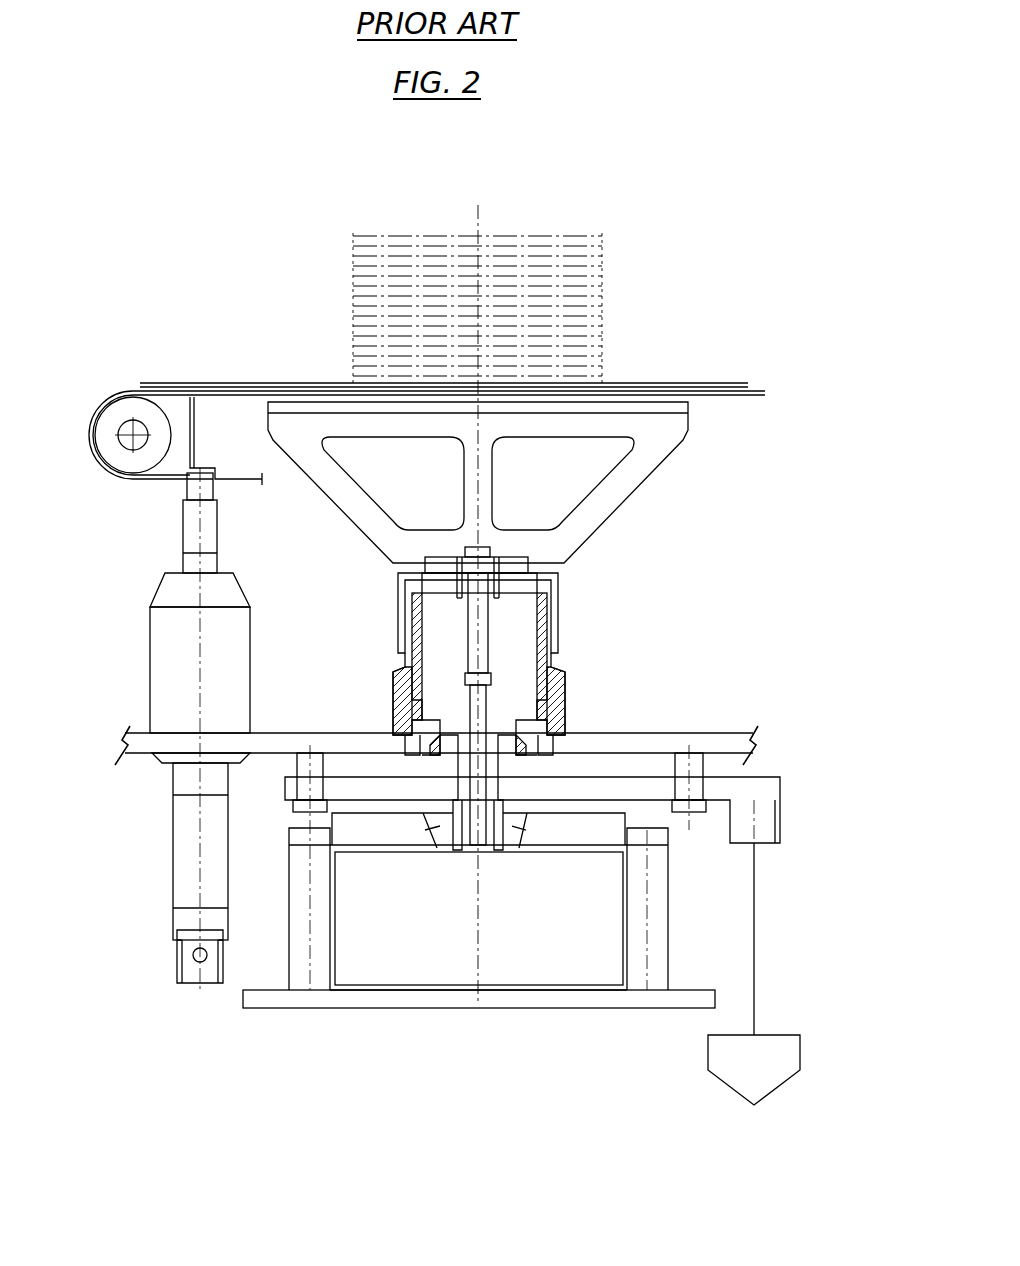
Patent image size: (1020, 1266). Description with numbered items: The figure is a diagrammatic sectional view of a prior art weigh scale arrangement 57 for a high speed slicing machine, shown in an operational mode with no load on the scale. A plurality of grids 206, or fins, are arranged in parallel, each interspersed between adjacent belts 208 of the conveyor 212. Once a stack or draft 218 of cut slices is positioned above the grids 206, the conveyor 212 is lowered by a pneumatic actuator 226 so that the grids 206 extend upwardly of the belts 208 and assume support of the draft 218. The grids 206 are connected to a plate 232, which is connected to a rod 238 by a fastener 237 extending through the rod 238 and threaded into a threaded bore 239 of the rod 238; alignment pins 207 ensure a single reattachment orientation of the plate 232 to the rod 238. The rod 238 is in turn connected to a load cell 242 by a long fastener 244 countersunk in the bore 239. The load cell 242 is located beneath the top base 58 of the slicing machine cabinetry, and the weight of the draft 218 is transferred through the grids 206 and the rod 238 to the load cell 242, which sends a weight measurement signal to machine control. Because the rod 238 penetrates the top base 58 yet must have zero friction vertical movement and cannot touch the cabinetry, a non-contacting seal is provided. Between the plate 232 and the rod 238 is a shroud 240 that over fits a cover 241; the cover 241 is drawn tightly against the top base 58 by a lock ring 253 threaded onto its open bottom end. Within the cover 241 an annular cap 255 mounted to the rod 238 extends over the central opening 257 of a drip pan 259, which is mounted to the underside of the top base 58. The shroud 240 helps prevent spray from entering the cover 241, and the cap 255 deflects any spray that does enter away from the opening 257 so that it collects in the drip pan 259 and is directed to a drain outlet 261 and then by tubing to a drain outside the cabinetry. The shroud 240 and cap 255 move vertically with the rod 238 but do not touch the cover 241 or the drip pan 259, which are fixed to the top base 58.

The draft 218 is at (603, 283).
The belts 208 is at (713, 385).
The conveyor 212 is at (762, 378).
The grids 206 is at (687, 428).
The weigh scale arrangement 57 is at (672, 503).
The fastener 237 is at (468, 555).
The threaded bore 239 is at (492, 555).
The alignment pins 207 is at (468, 560).
The plate 232 is at (510, 565).
The shroud 240 is at (555, 600).
The long fastener 244 is at (410, 615).
The rod 238 is at (548, 628).
The cover 241 is at (400, 665).
The annular cap 255 is at (415, 700).
The opening 257 is at (557, 680).
The lock ring 253 is at (582, 735).
The top base 58 is at (688, 733).
The drip pan 259 is at (633, 798).
The drain outlet 261 is at (760, 843).
The load cell 242 is at (497, 945).
The pneumatic actuator 226 is at (150, 647).